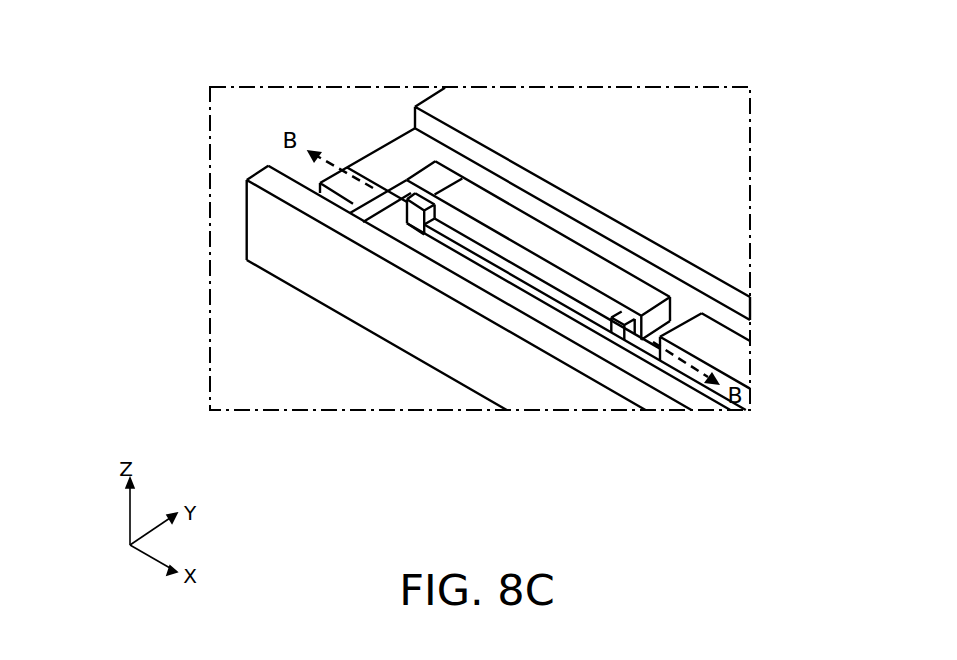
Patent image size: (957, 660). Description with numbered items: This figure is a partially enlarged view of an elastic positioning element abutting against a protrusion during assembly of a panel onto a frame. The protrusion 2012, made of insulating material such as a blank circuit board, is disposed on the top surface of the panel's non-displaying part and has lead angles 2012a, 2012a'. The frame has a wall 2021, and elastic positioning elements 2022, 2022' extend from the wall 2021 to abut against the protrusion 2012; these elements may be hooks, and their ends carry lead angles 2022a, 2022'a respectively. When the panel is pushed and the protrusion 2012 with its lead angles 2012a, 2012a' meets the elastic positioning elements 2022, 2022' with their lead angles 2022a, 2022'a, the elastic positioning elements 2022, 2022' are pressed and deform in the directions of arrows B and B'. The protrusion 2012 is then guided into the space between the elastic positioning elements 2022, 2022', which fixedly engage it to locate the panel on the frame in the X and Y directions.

The wall 2021 is at (447, 283).
The protrusion 2012 is at (577, 268).
The lead angle 2012a is at (582, 165).
The lead angle 2012a' is at (496, 100).
The elastic positioning element 2022 is at (578, 349).
The lead angle 2022a is at (634, 334).
The elastic positioning element 2022' is at (256, 244).
The lead angle 2022'a is at (367, 120).